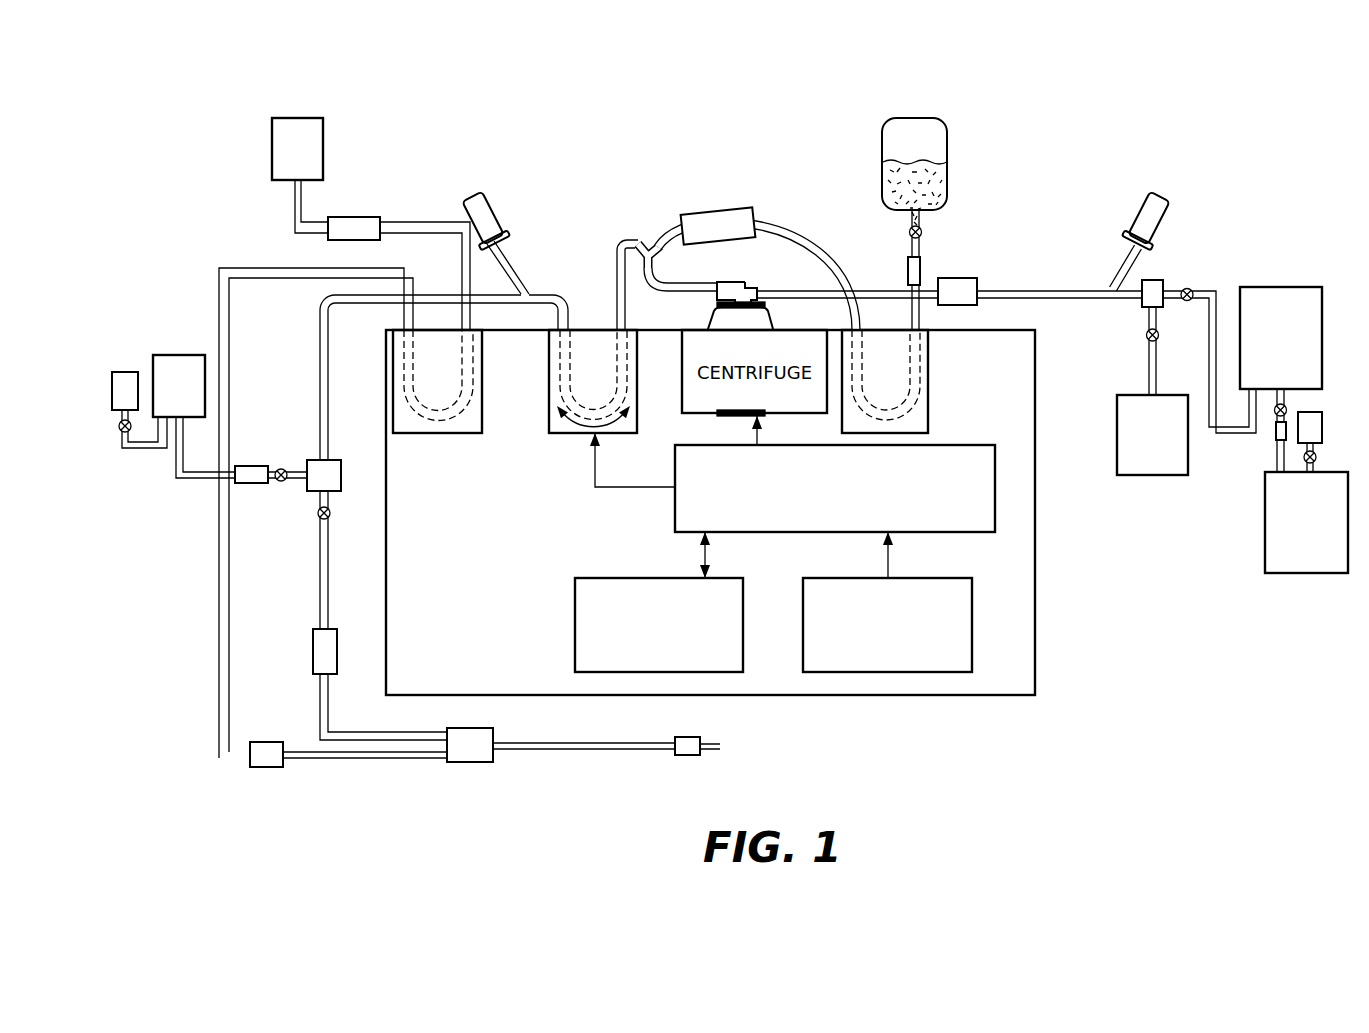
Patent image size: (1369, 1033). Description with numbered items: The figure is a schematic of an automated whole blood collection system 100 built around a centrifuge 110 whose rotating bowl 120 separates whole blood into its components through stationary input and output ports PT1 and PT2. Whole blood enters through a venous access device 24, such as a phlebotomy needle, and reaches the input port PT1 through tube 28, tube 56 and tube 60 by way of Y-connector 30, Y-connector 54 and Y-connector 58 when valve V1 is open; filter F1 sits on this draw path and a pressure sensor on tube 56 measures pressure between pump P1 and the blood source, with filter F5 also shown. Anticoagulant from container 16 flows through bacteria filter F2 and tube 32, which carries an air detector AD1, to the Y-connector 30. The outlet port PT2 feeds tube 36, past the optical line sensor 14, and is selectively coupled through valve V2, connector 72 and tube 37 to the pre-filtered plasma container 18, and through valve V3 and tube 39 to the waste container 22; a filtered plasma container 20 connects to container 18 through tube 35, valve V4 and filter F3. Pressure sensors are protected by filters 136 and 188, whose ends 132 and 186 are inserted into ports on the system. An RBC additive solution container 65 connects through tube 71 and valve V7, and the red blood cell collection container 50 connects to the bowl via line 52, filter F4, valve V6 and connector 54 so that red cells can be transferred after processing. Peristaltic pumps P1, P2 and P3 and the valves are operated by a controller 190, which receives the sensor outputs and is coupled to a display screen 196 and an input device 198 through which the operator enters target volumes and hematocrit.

The automated whole blood collection system 100 is at (558, 100).
The anticoagulant container 16 is at (300, 175).
The bacteria filter F2 is at (353, 217).
The anticoagulant tube 32 is at (408, 222).
The filter end 132 is at (494, 205).
The filter 136 is at (508, 226).
The Y-connector 58 is at (648, 242).
The filter F5 is at (708, 213).
The tube 56 is at (617, 272).
The tube 60 is at (684, 288).
The input port PT1 is at (714, 280).
The output port PT2 is at (760, 291).
The rotating bowl 120 is at (773, 318).
The RBC additive solution container 65 is at (930, 150).
The valve V7 is at (909, 232).
The line sensor 14 is at (957, 278).
The tube 36 is at (1048, 290).
The filter end 186 is at (1165, 205).
The filter 188 is at (1166, 249).
The connector 72 is at (1163, 283).
The tube 37 is at (1217, 297).
The tube 71 is at (910, 314).
The pre-filtered plasma container 18 is at (1281, 338).
The valve V3 is at (1145, 336).
The valve V2 is at (1186, 302).
The tube 39 is at (1148, 367).
The waste container 22 is at (1152, 435).
The valve V4 is at (1290, 409).
The filter F3 is at (1275, 432).
The tube 35 is at (1275, 457).
The filtered plasma container 20 is at (1306, 492).
The peristaltic pump P3 is at (418, 435).
The peristaltic pump P1 is at (565, 435).
The peristaltic pump P2 is at (928, 415).
The centrifuge 110 is at (722, 418).
The controller 190 is at (792, 474).
The display screen 196 is at (659, 602).
The input device 198 is at (887, 602).
The red blood cell collection container 50 is at (158, 401).
The valve V6 is at (281, 467).
The Y-connector 54 is at (324, 475).
The line 52 is at (193, 480).
The filter F4 is at (252, 484).
The valve V1 is at (318, 516).
The tube 28 is at (319, 604).
The filter F1 is at (333, 662).
The Y-connector 30 is at (561, 745).
The air detector AD1 is at (267, 768).
The venous access device 24 is at (689, 758).